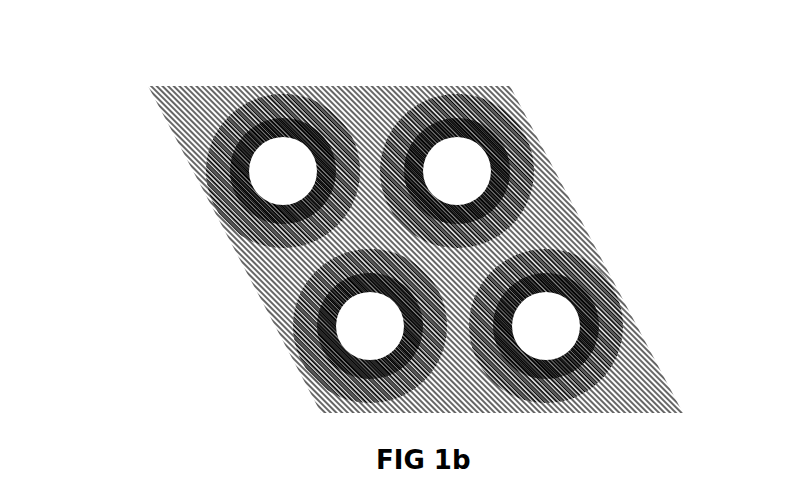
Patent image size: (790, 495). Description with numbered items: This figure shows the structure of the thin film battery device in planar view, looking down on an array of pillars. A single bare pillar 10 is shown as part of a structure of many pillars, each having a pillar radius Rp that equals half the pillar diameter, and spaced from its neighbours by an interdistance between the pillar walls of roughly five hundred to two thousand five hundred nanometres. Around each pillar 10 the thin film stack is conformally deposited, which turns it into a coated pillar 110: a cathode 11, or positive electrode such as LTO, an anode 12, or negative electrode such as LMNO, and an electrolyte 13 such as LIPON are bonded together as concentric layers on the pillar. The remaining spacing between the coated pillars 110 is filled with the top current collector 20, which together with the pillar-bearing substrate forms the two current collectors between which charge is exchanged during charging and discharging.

The coated pillar 110 is at (402, 265).
The top current collector 20 is at (181, 91).
The pillar 10 is at (357, 314).
The cathode 11 is at (490, 150).
The anode 12 is at (530, 182).
The electrolyte 13 is at (478, 102).
The pillar radius Rp is at (272, 163).